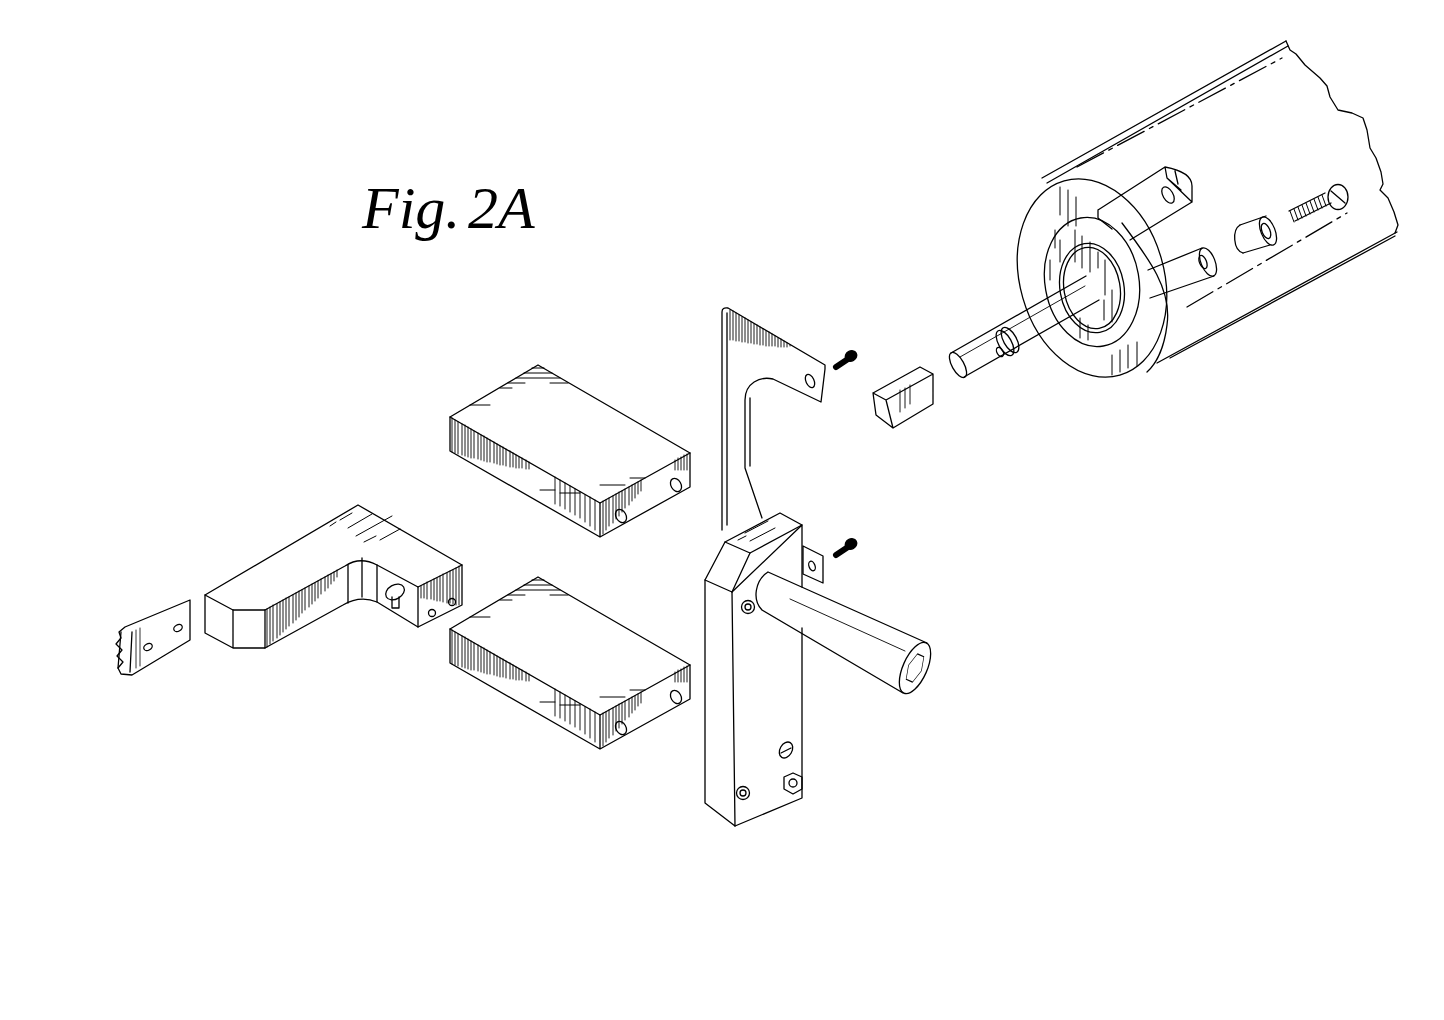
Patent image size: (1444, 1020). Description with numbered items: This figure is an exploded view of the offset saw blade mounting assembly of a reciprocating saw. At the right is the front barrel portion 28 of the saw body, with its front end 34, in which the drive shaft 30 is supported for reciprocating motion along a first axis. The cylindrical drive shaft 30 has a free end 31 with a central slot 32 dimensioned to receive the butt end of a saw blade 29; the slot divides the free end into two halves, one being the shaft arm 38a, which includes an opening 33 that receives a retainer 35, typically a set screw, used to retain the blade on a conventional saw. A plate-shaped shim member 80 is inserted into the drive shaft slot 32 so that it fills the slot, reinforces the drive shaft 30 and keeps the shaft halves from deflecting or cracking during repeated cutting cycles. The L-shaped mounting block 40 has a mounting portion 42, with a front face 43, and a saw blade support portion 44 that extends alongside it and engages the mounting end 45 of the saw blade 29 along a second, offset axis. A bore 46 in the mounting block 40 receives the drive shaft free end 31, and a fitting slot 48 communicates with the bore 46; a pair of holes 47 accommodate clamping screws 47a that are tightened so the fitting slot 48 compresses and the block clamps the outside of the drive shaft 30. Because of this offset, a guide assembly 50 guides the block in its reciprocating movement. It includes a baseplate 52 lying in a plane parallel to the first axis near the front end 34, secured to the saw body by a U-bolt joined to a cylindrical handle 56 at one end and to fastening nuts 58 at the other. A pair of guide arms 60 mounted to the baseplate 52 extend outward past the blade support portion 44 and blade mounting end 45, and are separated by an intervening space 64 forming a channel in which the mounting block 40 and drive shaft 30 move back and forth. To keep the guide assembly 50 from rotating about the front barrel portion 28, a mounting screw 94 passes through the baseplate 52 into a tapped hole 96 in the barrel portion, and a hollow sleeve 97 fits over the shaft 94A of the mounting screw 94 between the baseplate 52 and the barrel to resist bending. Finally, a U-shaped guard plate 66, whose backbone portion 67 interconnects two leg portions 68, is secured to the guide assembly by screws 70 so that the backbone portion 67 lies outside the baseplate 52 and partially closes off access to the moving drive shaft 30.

The front barrel portion 28 is at (1220, 206).
The saw blade 29 is at (141, 618).
The drive shaft 30 is at (1027, 310).
The free end 31 is at (978, 370).
The central slot 32 is at (970, 347).
The opening 33 is at (1003, 356).
The front end 34 is at (1030, 213).
The retainer 35 is at (1008, 355).
The shaft arm 38a is at (998, 360).
The mounting block 40 is at (358, 561).
The mounting portion 42 is at (406, 624).
The front face 43 is at (363, 567).
The saw blade support portion 44 is at (219, 625).
The mounting end 45 is at (168, 610).
The bore 46 is at (386, 601).
The holes 47 is at (453, 606).
The clamping screws 47a is at (433, 618).
The fitting slot 48 is at (396, 612).
The guide assembly 50 is at (798, 670).
The baseplate 52 is at (771, 719).
The cylindrical handle 56 is at (885, 660).
The fastening nuts 58 is at (805, 784).
The guide arms 60 is at (559, 434).
The intervening space 64 is at (557, 673).
The guard plate 66 is at (789, 352).
The backbone portion 67 is at (722, 350).
The leg portions 68 is at (780, 362).
The screws 70 is at (850, 350).
The shim member 80 is at (913, 402).
The mounting screw 94 is at (1350, 193).
The shaft of the mounting screw 94A is at (1308, 198).
The tapped hole 96 is at (1210, 277).
The sleeve 97 is at (1267, 248).